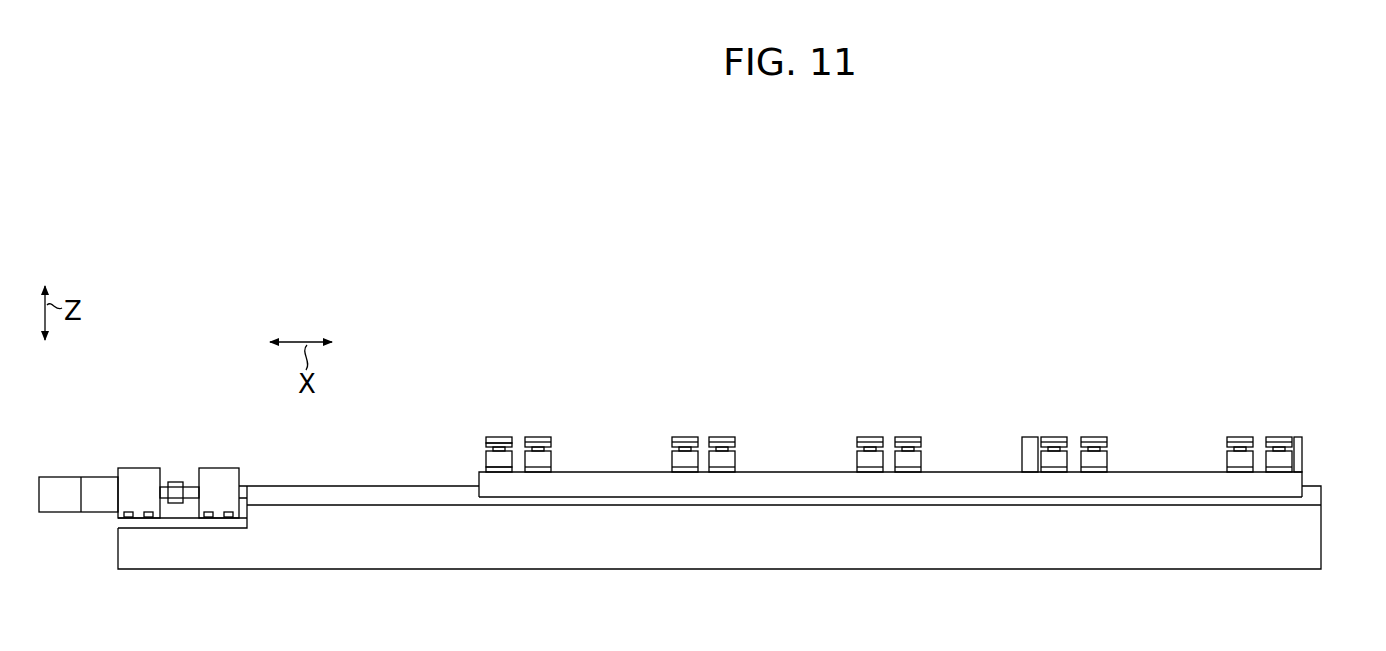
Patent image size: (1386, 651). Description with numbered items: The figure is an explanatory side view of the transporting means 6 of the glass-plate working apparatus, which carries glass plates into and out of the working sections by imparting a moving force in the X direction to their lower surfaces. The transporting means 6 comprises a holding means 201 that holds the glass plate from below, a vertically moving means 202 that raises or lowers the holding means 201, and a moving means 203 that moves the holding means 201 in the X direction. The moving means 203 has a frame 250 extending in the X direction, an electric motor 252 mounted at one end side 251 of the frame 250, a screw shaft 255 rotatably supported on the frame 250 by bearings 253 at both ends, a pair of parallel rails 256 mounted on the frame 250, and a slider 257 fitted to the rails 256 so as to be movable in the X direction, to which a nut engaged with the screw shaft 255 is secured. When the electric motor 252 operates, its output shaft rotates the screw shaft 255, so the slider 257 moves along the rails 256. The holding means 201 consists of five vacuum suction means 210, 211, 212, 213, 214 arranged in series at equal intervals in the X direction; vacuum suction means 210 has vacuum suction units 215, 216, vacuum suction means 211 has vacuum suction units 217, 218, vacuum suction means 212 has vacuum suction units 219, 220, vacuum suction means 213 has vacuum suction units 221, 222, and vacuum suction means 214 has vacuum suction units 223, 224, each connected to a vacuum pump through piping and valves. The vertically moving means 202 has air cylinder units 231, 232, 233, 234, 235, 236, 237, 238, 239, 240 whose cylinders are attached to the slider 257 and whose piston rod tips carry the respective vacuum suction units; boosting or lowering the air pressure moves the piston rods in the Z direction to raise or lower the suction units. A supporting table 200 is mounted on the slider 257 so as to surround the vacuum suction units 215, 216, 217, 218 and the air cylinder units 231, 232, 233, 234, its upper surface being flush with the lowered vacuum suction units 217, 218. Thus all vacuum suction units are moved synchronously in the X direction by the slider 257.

The transporting means 6 is at (131, 444).
The supporting table 200 is at (890, 515).
The holding means 201 is at (492, 431).
The vertically moving means 202 is at (486, 455).
The moving means 203 is at (78, 489).
The vacuum suction means 210 is at (1264, 410).
The vacuum suction means 211 is at (1069, 412).
The vacuum suction means 212 is at (876, 454).
The vacuum suction means 213 is at (710, 412).
The vacuum suction means 214 is at (503, 453).
The vacuum suction unit 215 is at (1283, 437).
The vacuum suction unit 216 is at (1243, 435).
The vacuum suction unit 217 is at (1090, 437).
The vacuum suction unit 218 is at (1048, 435).
The vacuum suction unit 219 is at (903, 437).
The vacuum suction unit 220 is at (873, 435).
The vacuum suction unit 221 is at (733, 437).
The vacuum suction unit 222 is at (686, 437).
The vacuum suction unit 223 is at (542, 437).
The vacuum suction unit 224 is at (493, 438).
The air cylinder unit 231 is at (1283, 457).
The air cylinder unit 232 is at (1232, 458).
The air cylinder unit 233 is at (1093, 458).
The air cylinder unit 234 is at (1041, 455).
The air cylinder unit 235 is at (912, 457).
The air cylinder unit 236 is at (862, 457).
The air cylinder unit 237 is at (730, 457).
The air cylinder unit 238 is at (682, 457).
The air cylinder unit 239 is at (550, 460).
The air cylinder unit 240 is at (500, 460).
The frame 250 is at (360, 552).
The one end side 251 is at (142, 553).
The electric motor 252 is at (68, 512).
The bearing 253 is at (218, 487).
The screw shaft 255 is at (190, 489).
The rail 256 is at (283, 496).
The slider 257 is at (1112, 483).